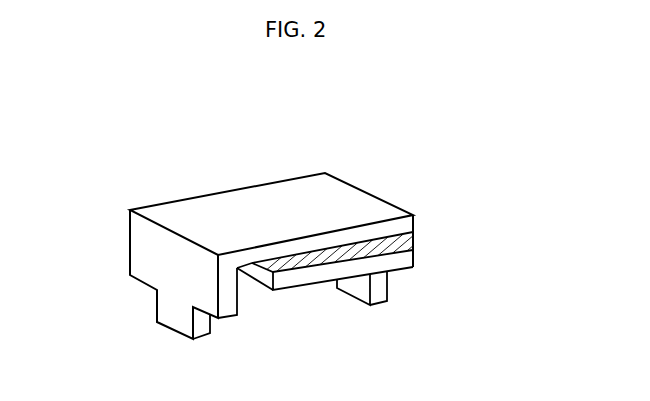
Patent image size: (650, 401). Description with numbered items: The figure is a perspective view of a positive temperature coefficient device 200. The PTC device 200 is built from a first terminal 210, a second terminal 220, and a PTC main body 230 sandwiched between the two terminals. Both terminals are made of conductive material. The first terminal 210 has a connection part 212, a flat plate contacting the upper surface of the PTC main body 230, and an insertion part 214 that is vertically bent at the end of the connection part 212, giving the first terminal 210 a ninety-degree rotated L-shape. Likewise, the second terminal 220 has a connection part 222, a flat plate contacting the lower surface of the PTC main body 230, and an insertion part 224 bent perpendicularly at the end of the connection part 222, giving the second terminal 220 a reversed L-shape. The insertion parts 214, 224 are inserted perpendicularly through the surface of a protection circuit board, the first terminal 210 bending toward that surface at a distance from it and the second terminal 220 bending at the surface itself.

The PTC device 200 is at (390, 150).
The first terminal 210 is at (125, 135).
The connection part 212 is at (175, 208).
The insertion part 214 is at (127, 240).
The second terminal 220 is at (510, 260).
The connection part 222 is at (403, 259).
The insertion part 224 is at (382, 285).
The PTC main body 230 is at (417, 242).